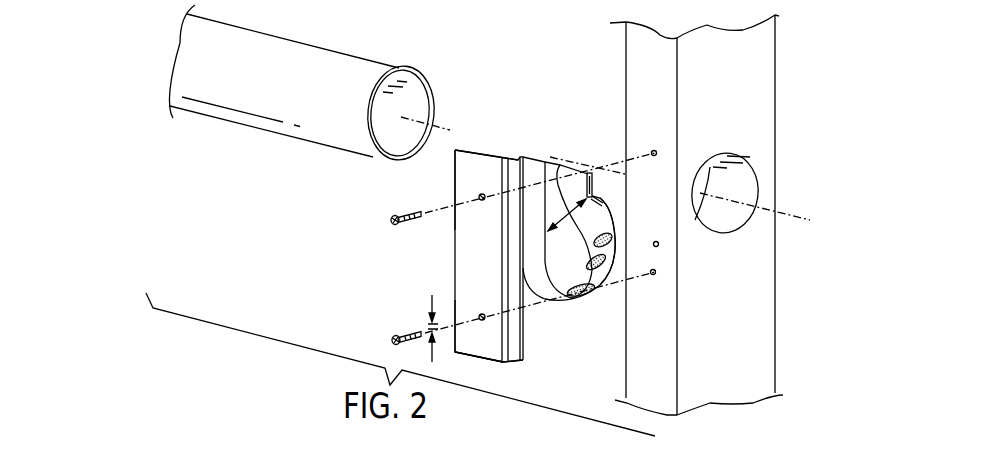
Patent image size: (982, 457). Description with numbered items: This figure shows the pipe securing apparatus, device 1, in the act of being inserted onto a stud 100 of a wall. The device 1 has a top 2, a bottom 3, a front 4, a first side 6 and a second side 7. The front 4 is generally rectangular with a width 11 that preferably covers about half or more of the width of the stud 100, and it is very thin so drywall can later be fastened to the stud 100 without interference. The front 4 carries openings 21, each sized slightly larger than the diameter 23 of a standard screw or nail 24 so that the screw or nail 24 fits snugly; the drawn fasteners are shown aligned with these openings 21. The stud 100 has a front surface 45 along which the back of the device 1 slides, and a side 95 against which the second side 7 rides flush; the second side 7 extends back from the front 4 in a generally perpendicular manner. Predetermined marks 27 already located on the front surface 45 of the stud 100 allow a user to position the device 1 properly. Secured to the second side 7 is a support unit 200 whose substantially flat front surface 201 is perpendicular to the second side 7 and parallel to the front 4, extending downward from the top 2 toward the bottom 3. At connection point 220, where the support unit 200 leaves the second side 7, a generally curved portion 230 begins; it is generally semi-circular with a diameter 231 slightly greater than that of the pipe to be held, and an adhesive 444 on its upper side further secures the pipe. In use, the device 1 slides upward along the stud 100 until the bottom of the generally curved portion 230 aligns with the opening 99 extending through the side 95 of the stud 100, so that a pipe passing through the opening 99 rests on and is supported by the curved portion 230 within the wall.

The device 1 is at (490, 268).
The top 2 is at (490, 153).
The bottom 3 is at (480, 358).
The front 4 is at (480, 348).
The first side 6 is at (455, 217).
The second side 7 is at (515, 350).
The width 11 is at (408, 30).
The opening 21 is at (481, 198).
The diameter 23 is at (432, 305).
The screw or nail 24 is at (393, 221).
The predetermined marks 27 is at (658, 246).
The front surface 45 is at (667, 338).
The side 95 is at (737, 355).
The opening 99 is at (750, 183).
The stud 100 is at (696, 215).
The support unit 200 is at (533, 185).
The front surface 201 is at (535, 228).
The connection point 220 is at (528, 296).
The generally curved portion 230 is at (605, 285).
The diameter 231 is at (557, 165).
The adhesive 444 is at (583, 296).